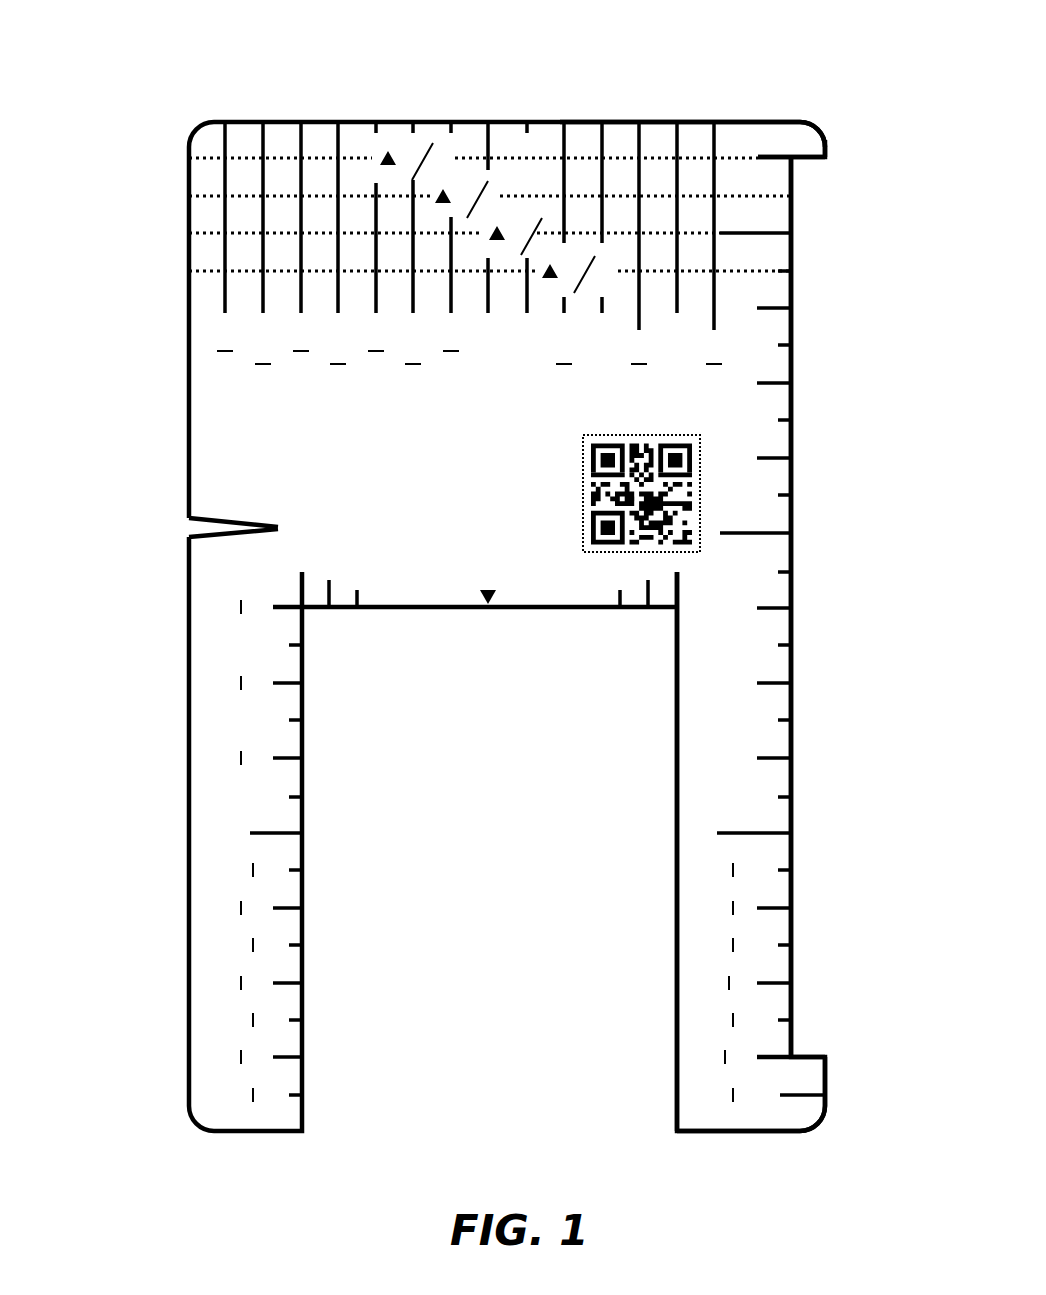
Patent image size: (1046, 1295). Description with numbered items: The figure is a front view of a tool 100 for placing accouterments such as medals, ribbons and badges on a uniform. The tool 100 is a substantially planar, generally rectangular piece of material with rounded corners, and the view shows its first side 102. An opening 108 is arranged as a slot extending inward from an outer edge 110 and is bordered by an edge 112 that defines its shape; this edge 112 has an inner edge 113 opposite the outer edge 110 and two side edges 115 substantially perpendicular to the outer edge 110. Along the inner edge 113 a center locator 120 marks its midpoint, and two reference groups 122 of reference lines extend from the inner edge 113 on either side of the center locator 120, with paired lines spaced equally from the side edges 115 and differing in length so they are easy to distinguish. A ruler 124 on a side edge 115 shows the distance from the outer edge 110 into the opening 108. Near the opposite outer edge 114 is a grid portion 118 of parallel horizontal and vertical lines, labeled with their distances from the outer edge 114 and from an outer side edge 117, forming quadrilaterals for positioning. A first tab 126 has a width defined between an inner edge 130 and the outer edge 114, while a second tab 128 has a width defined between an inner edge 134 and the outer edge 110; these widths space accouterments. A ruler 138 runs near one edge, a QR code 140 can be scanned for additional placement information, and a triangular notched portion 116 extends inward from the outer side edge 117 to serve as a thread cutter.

The tool 100 is at (693, 64).
The first side 102 is at (217, 462).
The opening 108 is at (495, 784).
The outer edge 110 is at (800, 1133).
The edge 112 is at (677, 808).
The inner edge 113 is at (647, 612).
The outer edge 114 is at (796, 119).
The side edge 115 is at (303, 1068).
The notched portion 116 is at (250, 520).
The outer side edge 117 is at (187, 271).
The grid portion 118 is at (166, 154).
The center locator 120 is at (490, 615).
The reference group 122 is at (333, 615).
The ruler 124 is at (303, 908).
The first tab 126 is at (828, 143).
The second tab 128 is at (827, 1068).
The inner edge 130 is at (806, 160).
The inner edge 134 is at (793, 1056).
The ruler 138 is at (808, 599).
The QR code 140 is at (583, 483).